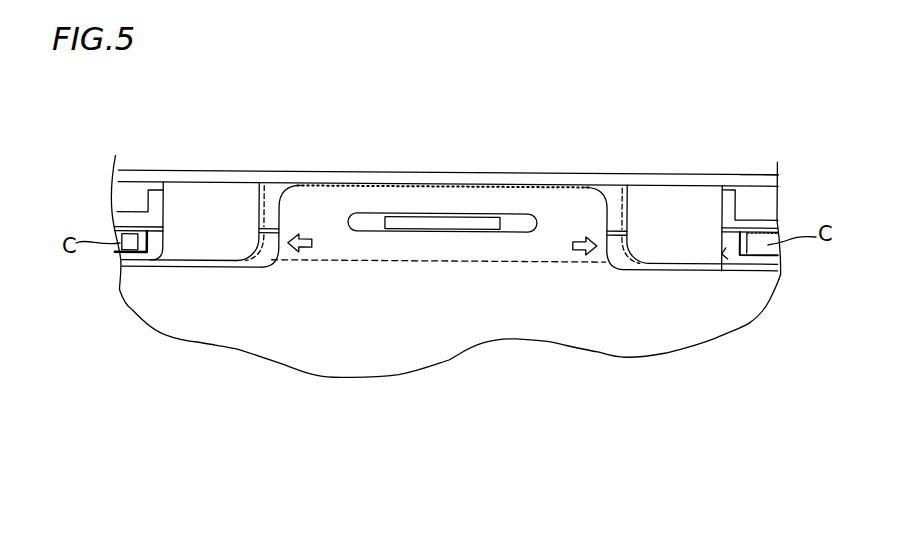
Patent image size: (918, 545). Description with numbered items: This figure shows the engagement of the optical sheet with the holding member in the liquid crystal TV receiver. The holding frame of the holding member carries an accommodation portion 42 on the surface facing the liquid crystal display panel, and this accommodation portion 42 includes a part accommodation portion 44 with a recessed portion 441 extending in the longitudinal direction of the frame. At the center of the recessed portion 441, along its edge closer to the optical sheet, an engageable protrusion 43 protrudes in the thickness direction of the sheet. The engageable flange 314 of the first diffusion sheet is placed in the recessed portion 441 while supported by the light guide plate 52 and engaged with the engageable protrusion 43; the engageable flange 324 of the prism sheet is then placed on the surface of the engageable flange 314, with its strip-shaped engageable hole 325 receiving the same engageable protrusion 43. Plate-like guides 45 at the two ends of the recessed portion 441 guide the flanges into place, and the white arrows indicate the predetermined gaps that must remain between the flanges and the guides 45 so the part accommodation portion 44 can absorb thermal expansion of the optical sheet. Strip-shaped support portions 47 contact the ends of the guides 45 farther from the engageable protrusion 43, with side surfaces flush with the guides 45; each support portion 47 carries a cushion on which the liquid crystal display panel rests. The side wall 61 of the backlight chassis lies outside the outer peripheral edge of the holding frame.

The accommodation portion 42 is at (401, 156).
The engageable protrusion 43 is at (477, 220).
The part accommodation portion 44 is at (616, 188).
The recessed portion 441 is at (606, 186).
The guide 45 is at (217, 210).
The support portion 47 is at (166, 240).
The light guide plate 52 is at (603, 265).
The side wall 61 is at (745, 175).
The engageable flange 314 is at (279, 186).
The engageable flange 324 is at (273, 174).
The engageable hole 325 is at (528, 222).